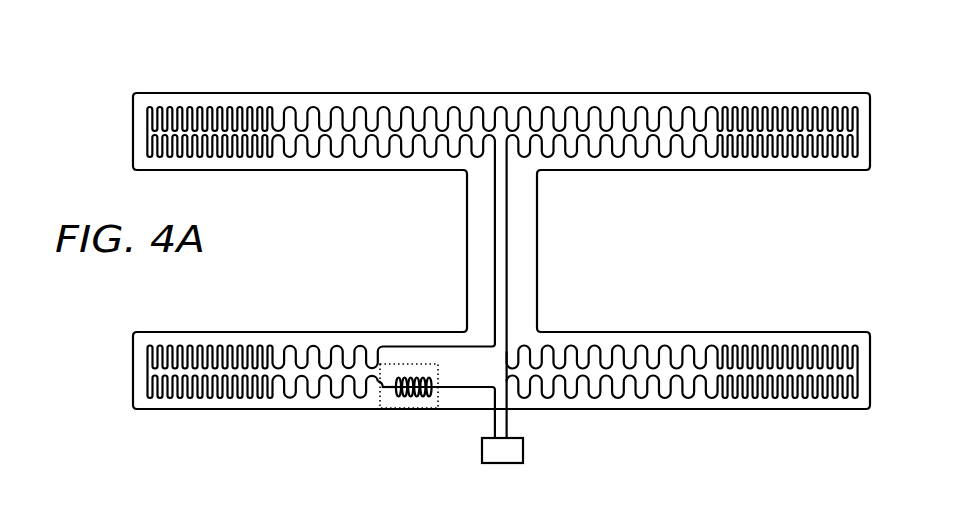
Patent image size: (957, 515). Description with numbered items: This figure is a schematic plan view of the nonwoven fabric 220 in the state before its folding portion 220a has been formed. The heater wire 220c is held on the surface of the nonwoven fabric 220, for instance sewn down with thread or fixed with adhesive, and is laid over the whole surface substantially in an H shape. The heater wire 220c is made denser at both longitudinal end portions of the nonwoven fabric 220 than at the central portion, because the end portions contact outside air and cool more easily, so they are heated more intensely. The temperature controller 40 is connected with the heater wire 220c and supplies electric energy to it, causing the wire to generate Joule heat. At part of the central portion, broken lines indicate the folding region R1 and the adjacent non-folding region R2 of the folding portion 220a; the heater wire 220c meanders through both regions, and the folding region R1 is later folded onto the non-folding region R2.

The nonwoven fabric 220 is at (197, 78).
The folding portion 220a is at (425, 407).
The heater wire 220c is at (217, 400).
The temperature controller 40 is at (524, 451).
The folding region R1 is at (378, 392).
The non-folding region R2 is at (407, 363).